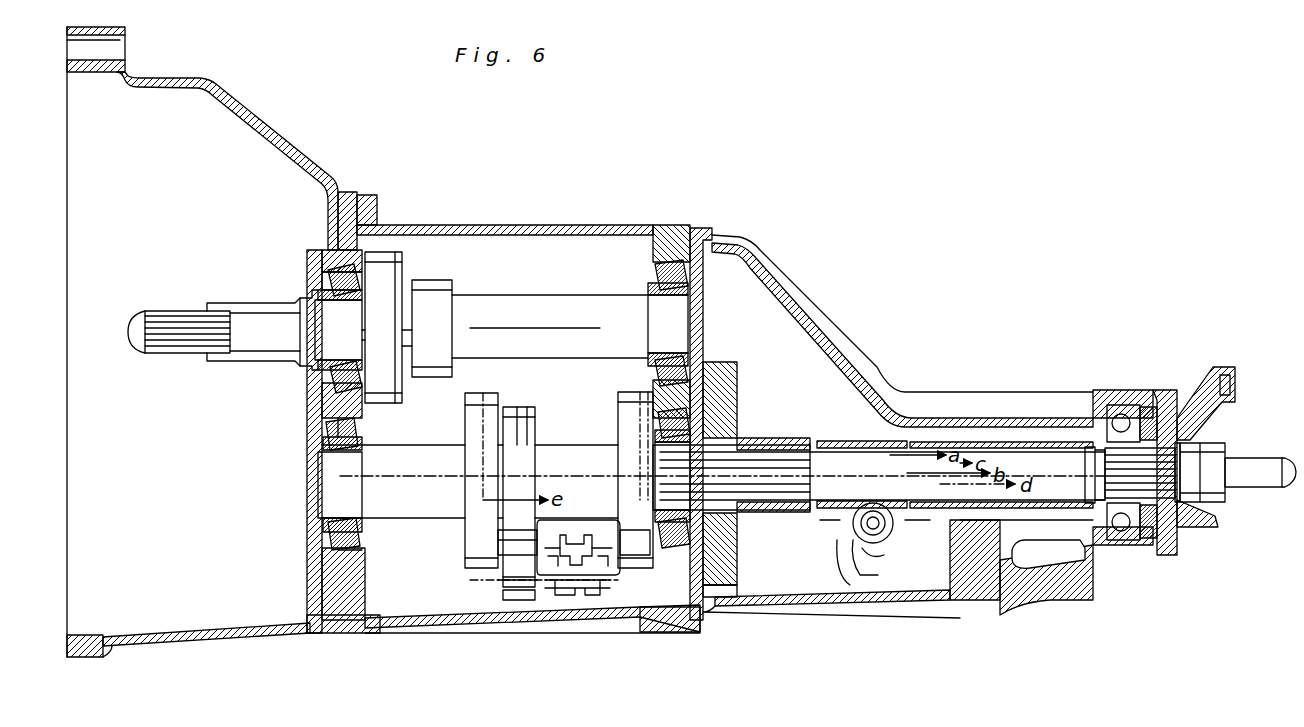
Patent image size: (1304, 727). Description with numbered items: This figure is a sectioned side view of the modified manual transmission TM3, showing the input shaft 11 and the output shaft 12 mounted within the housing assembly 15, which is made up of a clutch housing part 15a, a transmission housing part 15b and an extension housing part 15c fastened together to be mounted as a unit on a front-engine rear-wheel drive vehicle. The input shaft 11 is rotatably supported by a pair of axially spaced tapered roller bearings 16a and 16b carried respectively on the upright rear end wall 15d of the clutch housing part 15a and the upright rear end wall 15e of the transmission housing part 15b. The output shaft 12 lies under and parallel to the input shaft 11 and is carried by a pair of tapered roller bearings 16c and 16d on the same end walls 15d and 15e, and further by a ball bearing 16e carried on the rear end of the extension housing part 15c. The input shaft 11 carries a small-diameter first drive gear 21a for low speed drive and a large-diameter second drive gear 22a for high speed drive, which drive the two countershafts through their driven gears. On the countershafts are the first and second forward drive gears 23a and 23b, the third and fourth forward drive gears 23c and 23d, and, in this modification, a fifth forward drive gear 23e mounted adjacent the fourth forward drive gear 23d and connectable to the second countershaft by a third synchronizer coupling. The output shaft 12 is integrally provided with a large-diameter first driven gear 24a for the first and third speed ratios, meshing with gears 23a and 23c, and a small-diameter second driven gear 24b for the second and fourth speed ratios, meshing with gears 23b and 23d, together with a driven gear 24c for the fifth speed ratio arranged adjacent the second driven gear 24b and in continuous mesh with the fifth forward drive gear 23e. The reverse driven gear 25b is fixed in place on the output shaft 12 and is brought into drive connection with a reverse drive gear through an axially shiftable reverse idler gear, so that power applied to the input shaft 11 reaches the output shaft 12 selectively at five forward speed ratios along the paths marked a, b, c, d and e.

The modified manual transmission TM3 is at (622, 220).
The input shaft 11 is at (203, 343).
The output shaft 12 is at (940, 493).
The housing assembly 15 is at (843, 346).
The clutch housing part 15a is at (262, 630).
The transmission housing part 15b is at (669, 633).
The extension housing part 15c is at (803, 603).
The upright rear end wall of clutch housing part 15d is at (308, 425).
The upright rear end wall of transmission housing part 15e is at (666, 252).
The tapered roller bearing 16a is at (337, 262).
The tapered roller bearing 16b is at (658, 283).
The tapered roller bearing 16c is at (334, 536).
The tapered roller bearing 16d is at (667, 523).
The ball bearing 16e is at (1126, 528).
The first drive gear 21a is at (448, 285).
The second drive gear 22a is at (395, 272).
The first forward drive gear 23a is at (636, 577).
The second forward drive gear 23b is at (530, 570).
The third forward drive gear 23c is at (650, 601).
The fourth forward drive gear 23d is at (577, 622).
The fifth forward drive gear 23e is at (480, 606).
The first driven gear 24a is at (629, 431).
The second driven gear 24b is at (528, 425).
The third driven gear 24c is at (470, 425).
The reverse driven gear 25b is at (737, 413).